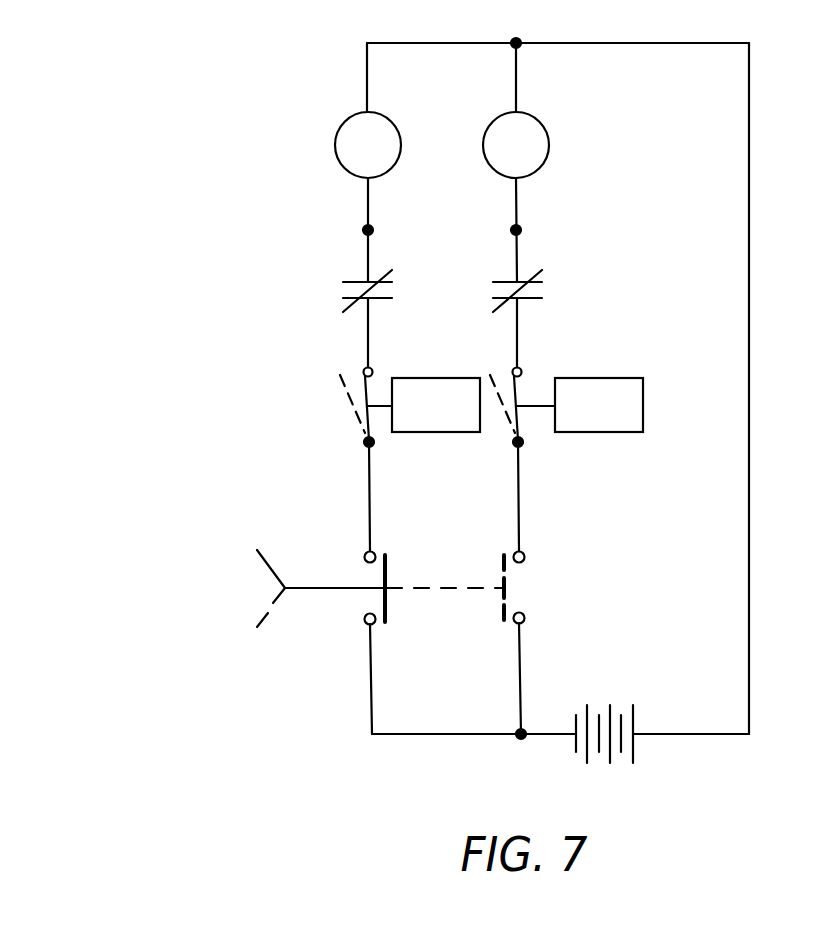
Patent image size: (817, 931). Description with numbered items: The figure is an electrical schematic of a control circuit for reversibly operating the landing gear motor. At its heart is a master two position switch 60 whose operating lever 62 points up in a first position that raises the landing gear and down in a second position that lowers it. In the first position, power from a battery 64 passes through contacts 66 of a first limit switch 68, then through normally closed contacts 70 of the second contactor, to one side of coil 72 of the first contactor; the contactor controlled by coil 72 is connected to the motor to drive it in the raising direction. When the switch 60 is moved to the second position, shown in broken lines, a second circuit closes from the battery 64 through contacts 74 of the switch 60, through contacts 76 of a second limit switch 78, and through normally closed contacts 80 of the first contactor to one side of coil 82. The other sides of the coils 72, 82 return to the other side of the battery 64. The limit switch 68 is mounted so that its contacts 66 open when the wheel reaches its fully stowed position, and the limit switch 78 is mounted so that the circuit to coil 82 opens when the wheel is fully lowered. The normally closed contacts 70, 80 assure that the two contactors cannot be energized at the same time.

The master two position switch 60 is at (333, 579).
The operating lever 62 is at (274, 570).
The battery 64 is at (628, 696).
The contacts of first limit switch 66 is at (357, 368).
The first limit switch 68 is at (450, 378).
The normally closed contacts of contactor C2 70 is at (360, 280).
The coil of contactor C1 72 is at (341, 127).
The contacts of switch 60 74 is at (531, 547).
The contacts of second limit switch 76 is at (531, 356).
The second limit switch 78 is at (643, 398).
The normally closed contacts of contactor C1 80 is at (534, 272).
The coil of contactor 82 is at (545, 128).